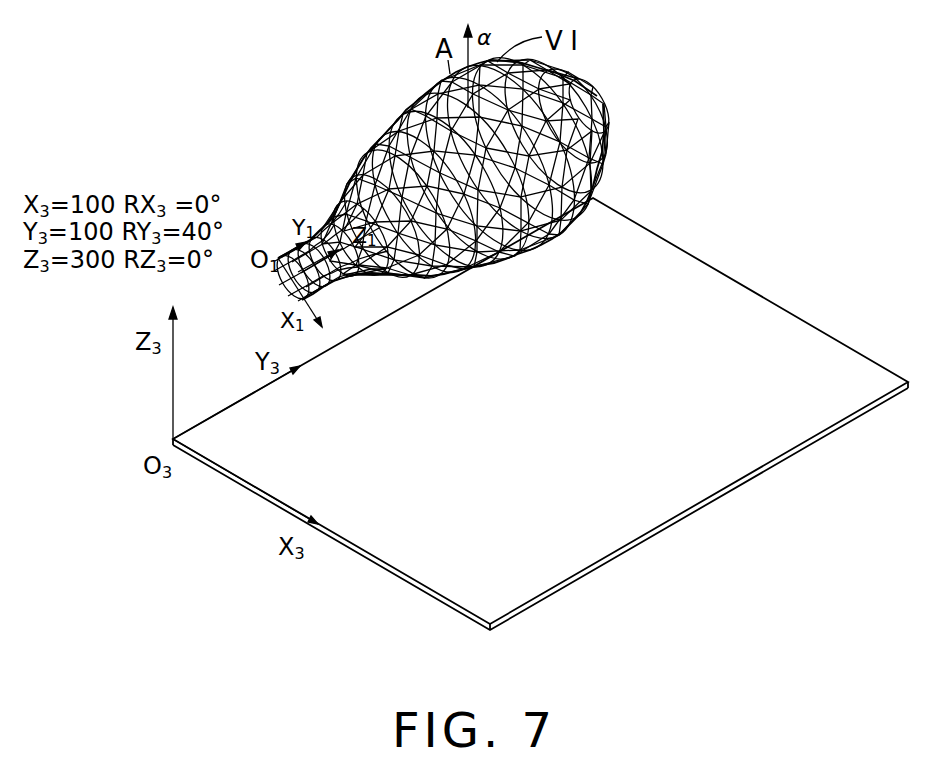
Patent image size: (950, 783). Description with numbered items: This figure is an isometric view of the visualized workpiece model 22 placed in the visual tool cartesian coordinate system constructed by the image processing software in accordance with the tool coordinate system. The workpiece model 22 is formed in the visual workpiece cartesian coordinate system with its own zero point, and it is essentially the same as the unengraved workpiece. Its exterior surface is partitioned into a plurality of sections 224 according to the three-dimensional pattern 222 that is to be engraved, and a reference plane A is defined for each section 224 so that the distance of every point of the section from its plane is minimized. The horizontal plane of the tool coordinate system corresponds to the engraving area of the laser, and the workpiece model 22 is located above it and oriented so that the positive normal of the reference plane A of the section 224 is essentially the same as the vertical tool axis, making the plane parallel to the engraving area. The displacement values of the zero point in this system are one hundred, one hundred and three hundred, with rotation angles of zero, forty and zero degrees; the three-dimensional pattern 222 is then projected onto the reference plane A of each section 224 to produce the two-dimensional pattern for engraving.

The workpiece model 22 is at (427, 171).
The three-dimensional pattern 222 is at (358, 143).
The section 224 is at (433, 87).